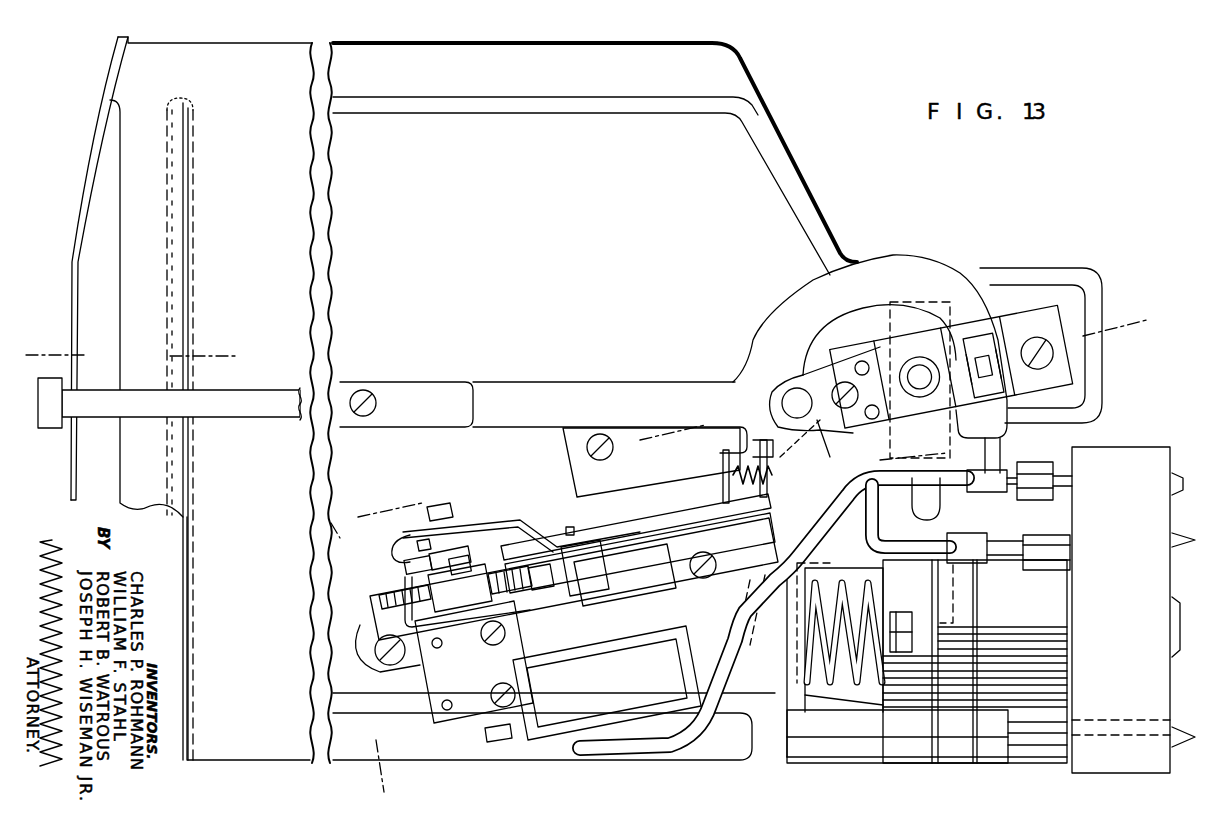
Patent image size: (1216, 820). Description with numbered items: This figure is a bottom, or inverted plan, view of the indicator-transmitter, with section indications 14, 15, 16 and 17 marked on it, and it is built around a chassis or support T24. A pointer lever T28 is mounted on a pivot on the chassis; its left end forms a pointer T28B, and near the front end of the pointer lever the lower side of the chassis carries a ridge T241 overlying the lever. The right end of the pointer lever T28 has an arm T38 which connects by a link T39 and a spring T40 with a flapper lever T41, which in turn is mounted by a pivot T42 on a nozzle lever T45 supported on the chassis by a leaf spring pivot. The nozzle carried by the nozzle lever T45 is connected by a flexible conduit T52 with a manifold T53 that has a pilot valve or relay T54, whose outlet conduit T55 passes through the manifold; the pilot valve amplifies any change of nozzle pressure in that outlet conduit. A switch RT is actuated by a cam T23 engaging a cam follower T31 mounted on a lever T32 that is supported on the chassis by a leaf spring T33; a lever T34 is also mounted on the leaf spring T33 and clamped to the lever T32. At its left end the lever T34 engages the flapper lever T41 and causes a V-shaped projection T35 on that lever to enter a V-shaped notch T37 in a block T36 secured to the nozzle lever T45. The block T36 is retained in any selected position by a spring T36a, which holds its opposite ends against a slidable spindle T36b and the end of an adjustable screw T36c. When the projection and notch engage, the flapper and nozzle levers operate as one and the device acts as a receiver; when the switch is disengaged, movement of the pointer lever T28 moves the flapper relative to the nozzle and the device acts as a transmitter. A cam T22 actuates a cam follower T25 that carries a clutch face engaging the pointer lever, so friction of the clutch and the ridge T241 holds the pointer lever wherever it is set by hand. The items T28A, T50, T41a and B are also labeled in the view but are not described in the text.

The chassis T24 is at (352, 53).
The curved strip T28A is at (95, 137).
The ridge T241 is at (180, 243).
The pointer lever T28 is at (247, 398).
The pointer T28B is at (53, 420).
The cam follower T25 is at (918, 372).
The cam T22 is at (950, 302).
The lever T32 is at (927, 492).
The arm T38 is at (838, 505).
The leaf spring T33 is at (738, 592).
The flexible conduit T52 is at (675, 737).
The branch tube T50 is at (945, 562).
The cam follower T31 is at (920, 558).
The cam T23 is at (978, 613).
The pilot valve or relay T54 is at (1048, 610).
The manifold T53 is at (1135, 460).
The outlet conduit T55 is at (1135, 720).
The lever T34 is at (497, 527).
The V-shaped projection T35 is at (405, 563).
The block T36 is at (428, 585).
The spring T36a is at (512, 638).
The slidable spindle T36b is at (568, 600).
The adjustable screw T36c is at (382, 598).
The V-shaped notch T37 is at (457, 570).
The link T39 is at (523, 557).
The spring T40 is at (614, 528).
The flapper lever T41 is at (395, 540).
The latch tab T41a is at (418, 546).
The pivot T42 is at (440, 516).
The nozzle lever T45 is at (510, 595).
The switch RT is at (480, 514).
The pin B is at (572, 527).
The section line 14 is at (371, 513).
The section line 15 is at (328, 531).
The section line 16 is at (653, 434).
The section line 17 is at (36, 351).